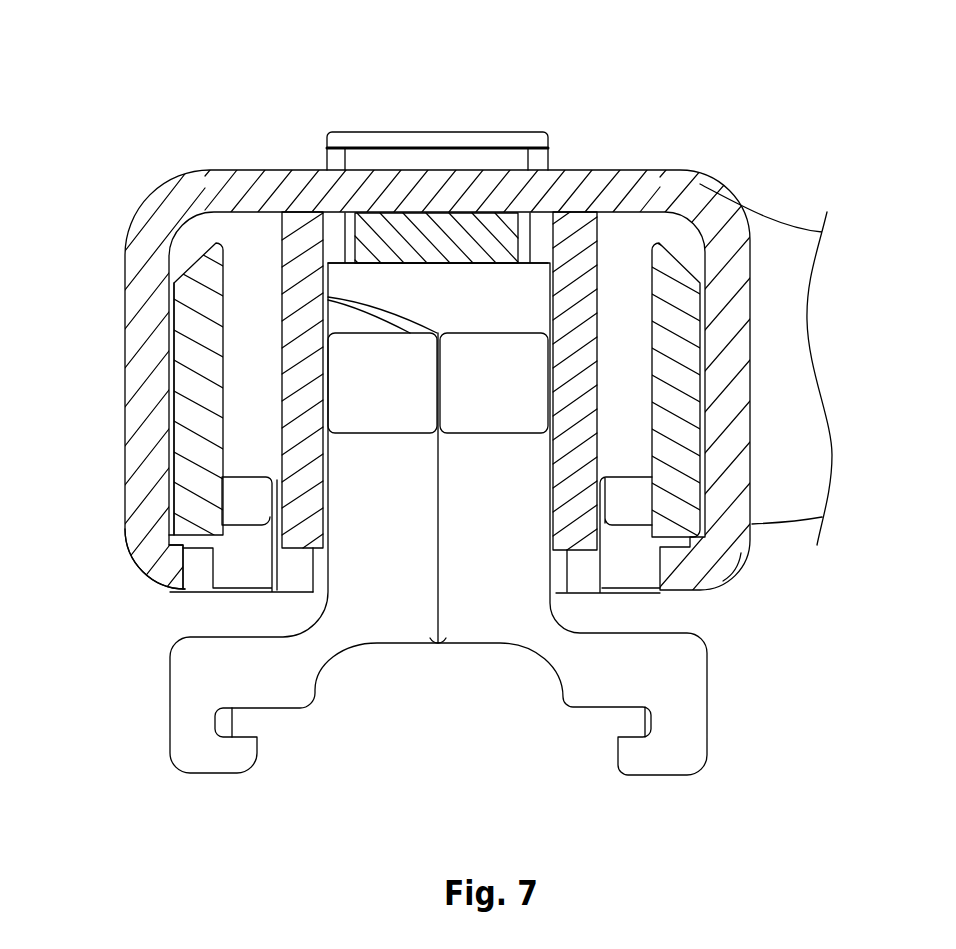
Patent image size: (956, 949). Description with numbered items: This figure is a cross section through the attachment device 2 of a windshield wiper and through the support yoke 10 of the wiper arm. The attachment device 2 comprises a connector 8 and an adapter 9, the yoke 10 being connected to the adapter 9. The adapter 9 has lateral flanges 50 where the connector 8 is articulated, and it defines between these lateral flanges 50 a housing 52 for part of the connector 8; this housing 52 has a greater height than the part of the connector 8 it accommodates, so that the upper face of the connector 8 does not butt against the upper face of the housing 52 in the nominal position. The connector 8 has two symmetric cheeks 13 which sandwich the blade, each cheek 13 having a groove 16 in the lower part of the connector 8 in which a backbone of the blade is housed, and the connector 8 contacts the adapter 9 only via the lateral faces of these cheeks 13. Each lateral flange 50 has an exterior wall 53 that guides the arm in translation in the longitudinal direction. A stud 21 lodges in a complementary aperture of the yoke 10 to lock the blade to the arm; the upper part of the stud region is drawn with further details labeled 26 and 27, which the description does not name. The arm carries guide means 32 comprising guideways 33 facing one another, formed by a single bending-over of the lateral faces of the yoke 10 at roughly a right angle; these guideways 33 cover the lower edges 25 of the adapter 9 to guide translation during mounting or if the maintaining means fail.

The attachment device 2 is at (385, 520).
The connector 8 is at (405, 698).
The adapter 9 is at (677, 233).
The support yoke 10 is at (241, 195).
The cheeks 13 is at (474, 623).
The groove 16 is at (252, 724).
The stud 21 is at (450, 233).
The lower edges 25 is at (200, 546).
The cover 26 is at (481, 130).
The cover edge 27 is at (553, 158).
The guide means 32 is at (124, 582).
The guideways 33 is at (199, 574).
The lateral flanges 50 is at (173, 377).
The housing 52 is at (400, 283).
The exterior wall 53 is at (186, 452).